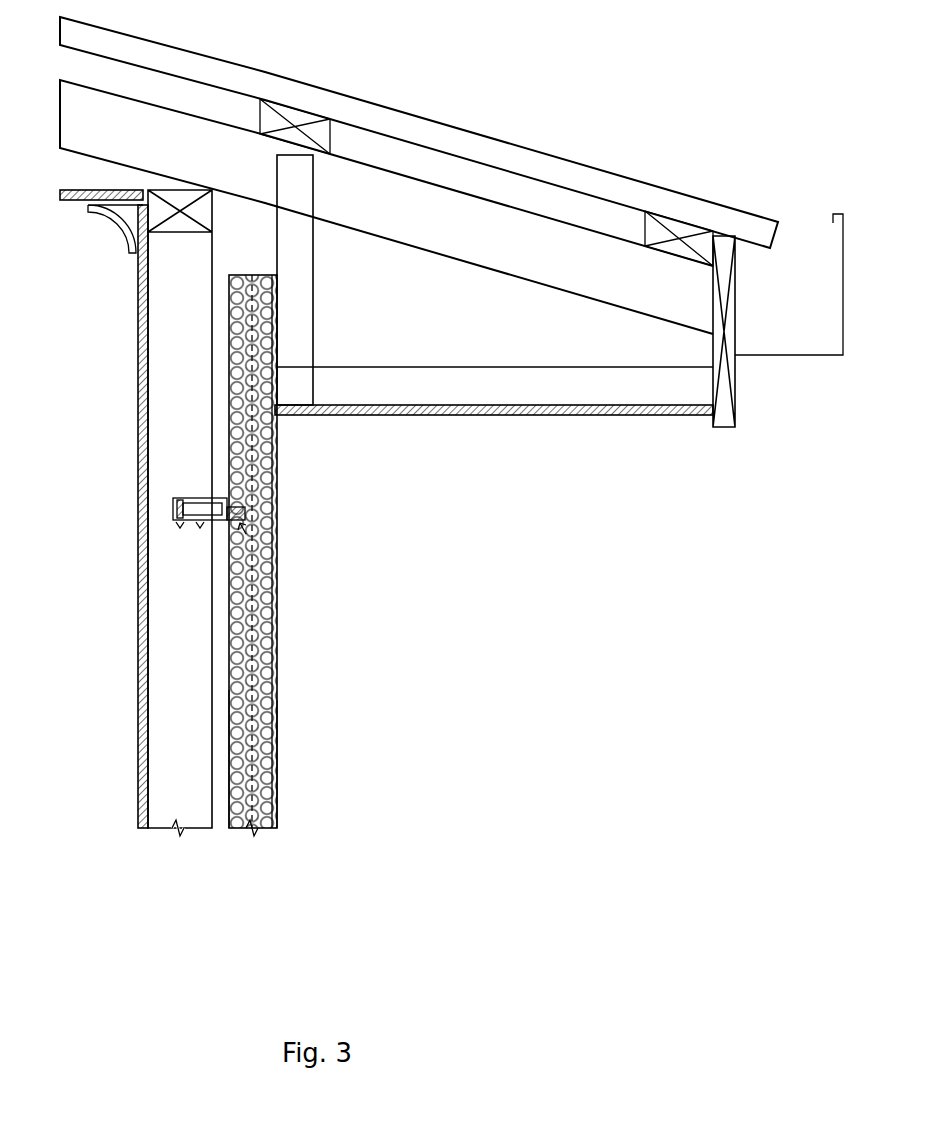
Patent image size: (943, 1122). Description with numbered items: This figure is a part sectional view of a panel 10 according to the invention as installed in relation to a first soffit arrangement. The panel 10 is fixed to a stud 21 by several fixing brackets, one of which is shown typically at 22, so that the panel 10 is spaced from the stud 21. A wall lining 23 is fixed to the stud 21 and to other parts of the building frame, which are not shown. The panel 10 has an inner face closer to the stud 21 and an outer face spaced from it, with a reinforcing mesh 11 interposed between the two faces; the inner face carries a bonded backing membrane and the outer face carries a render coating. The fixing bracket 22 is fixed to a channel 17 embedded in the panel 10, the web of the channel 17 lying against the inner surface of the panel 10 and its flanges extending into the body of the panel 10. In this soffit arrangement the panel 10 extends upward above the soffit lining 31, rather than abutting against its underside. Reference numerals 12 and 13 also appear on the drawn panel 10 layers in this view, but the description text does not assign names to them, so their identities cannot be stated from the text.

The panel 10 is at (276, 808).
The reinforcing mesh 11 is at (275, 757).
The inner layer of insulating panel 12 is at (218, 750).
The insulation core 13 is at (288, 672).
The channel 17 is at (275, 555).
The stud 21 is at (203, 487).
The fixing bracket 22 is at (222, 522).
The wall lining 23 is at (129, 780).
The soffit lining 31 is at (373, 395).